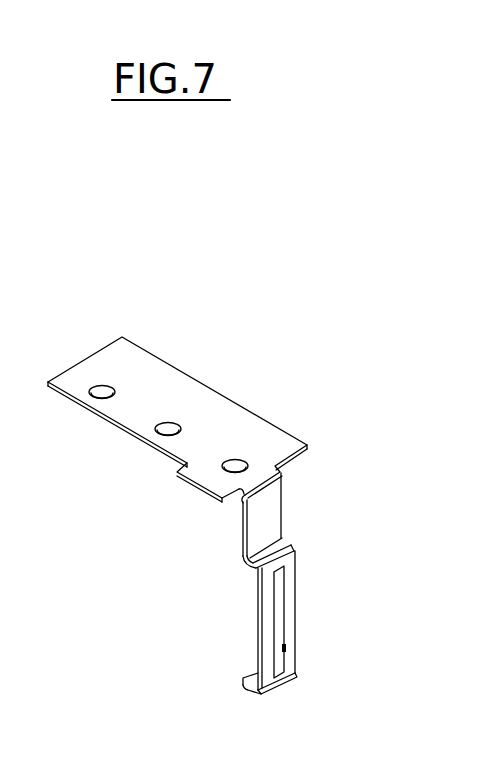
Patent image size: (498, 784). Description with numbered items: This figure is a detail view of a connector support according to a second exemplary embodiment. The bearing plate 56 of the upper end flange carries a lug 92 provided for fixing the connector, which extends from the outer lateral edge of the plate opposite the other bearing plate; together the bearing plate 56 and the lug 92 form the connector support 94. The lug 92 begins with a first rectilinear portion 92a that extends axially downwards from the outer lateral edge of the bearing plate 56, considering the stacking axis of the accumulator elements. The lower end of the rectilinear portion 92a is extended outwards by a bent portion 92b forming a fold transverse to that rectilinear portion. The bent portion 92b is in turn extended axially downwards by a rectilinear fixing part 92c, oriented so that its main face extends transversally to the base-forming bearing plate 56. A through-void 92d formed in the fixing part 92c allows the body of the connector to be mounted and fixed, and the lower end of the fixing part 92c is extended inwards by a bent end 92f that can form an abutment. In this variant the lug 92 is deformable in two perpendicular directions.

The bearing plate 56 is at (237, 412).
The connector support 94 is at (126, 443).
The lug 92 is at (233, 552).
The first rectilinear portion 92a is at (276, 513).
The bent portion 92b is at (295, 545).
The rectilinear fixing part 92c is at (292, 603).
The through-void 92d is at (288, 651).
The bent end 92f is at (247, 694).